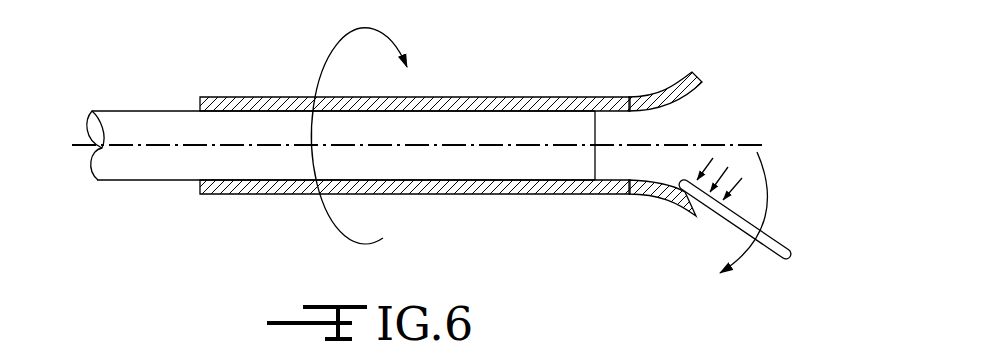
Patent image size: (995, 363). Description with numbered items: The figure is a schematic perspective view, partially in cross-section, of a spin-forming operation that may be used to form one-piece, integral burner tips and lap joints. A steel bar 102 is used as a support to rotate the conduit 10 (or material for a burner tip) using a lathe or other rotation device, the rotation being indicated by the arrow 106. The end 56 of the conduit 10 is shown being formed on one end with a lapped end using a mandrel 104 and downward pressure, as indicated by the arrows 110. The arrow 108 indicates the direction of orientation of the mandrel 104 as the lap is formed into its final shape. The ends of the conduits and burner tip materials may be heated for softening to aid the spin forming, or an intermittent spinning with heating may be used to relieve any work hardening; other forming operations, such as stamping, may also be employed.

The conduit 10 is at (453, 97).
The end of conduit 56 is at (688, 100).
The steel bar 102 is at (127, 164).
The mandrel 104 is at (777, 239).
The arrow indicating rotation 106 is at (328, 63).
The arrow indicating mandrel orientation direction 108 is at (767, 193).
The arrows indicating downward pressure 110 is at (706, 165).